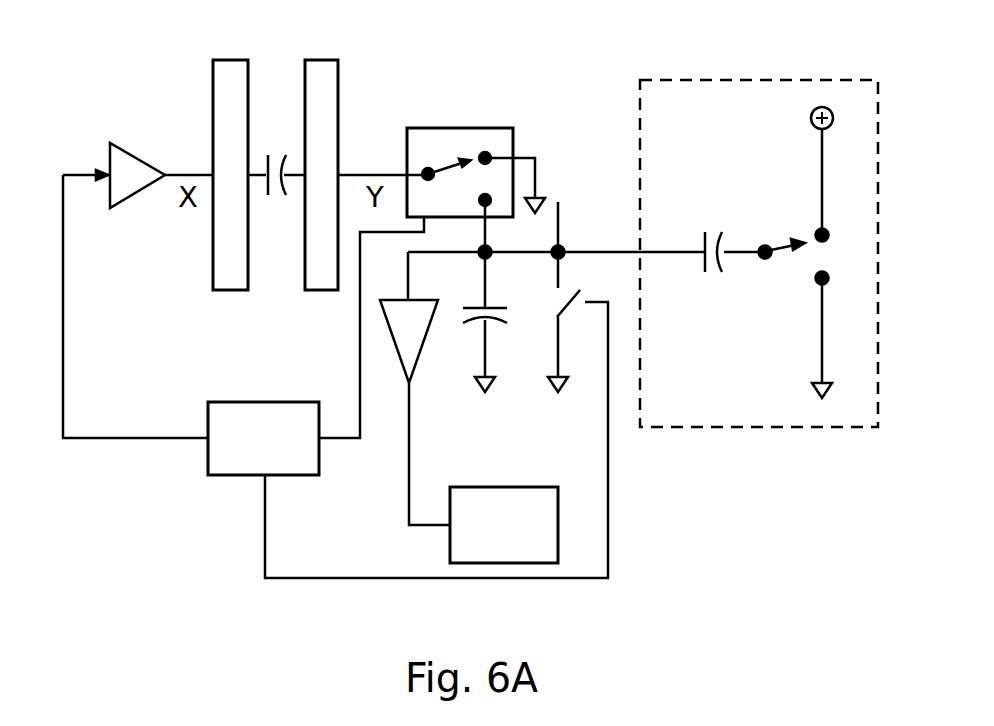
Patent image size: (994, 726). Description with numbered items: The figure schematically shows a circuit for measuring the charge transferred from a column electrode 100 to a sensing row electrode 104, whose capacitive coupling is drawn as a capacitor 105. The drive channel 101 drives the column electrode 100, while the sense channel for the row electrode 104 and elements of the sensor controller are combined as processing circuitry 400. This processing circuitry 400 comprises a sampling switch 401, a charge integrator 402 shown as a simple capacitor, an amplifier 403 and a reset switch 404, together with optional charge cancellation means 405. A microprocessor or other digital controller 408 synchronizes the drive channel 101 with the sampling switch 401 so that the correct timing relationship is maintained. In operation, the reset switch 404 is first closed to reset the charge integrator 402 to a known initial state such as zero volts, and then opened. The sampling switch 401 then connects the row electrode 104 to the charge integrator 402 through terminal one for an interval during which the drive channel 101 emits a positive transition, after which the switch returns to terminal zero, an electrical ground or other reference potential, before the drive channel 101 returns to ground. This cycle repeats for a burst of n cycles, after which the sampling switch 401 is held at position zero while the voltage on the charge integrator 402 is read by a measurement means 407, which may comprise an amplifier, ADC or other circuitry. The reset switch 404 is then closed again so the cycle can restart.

The column electrode 100 is at (213, 127).
The drive channel 101 is at (128, 202).
The sensing row electrode 104 is at (338, 110).
The capacitor 105 is at (282, 198).
The processing circuitry 400 is at (643, 443).
The sampling switch 401 is at (447, 128).
The charge integrator 402 is at (456, 313).
The amplifier 403 is at (405, 373).
The reset switch 404 is at (548, 303).
The charge cancellation means 405 is at (752, 108).
The measurement means 407 is at (505, 487).
The digital controller 408 is at (293, 455).